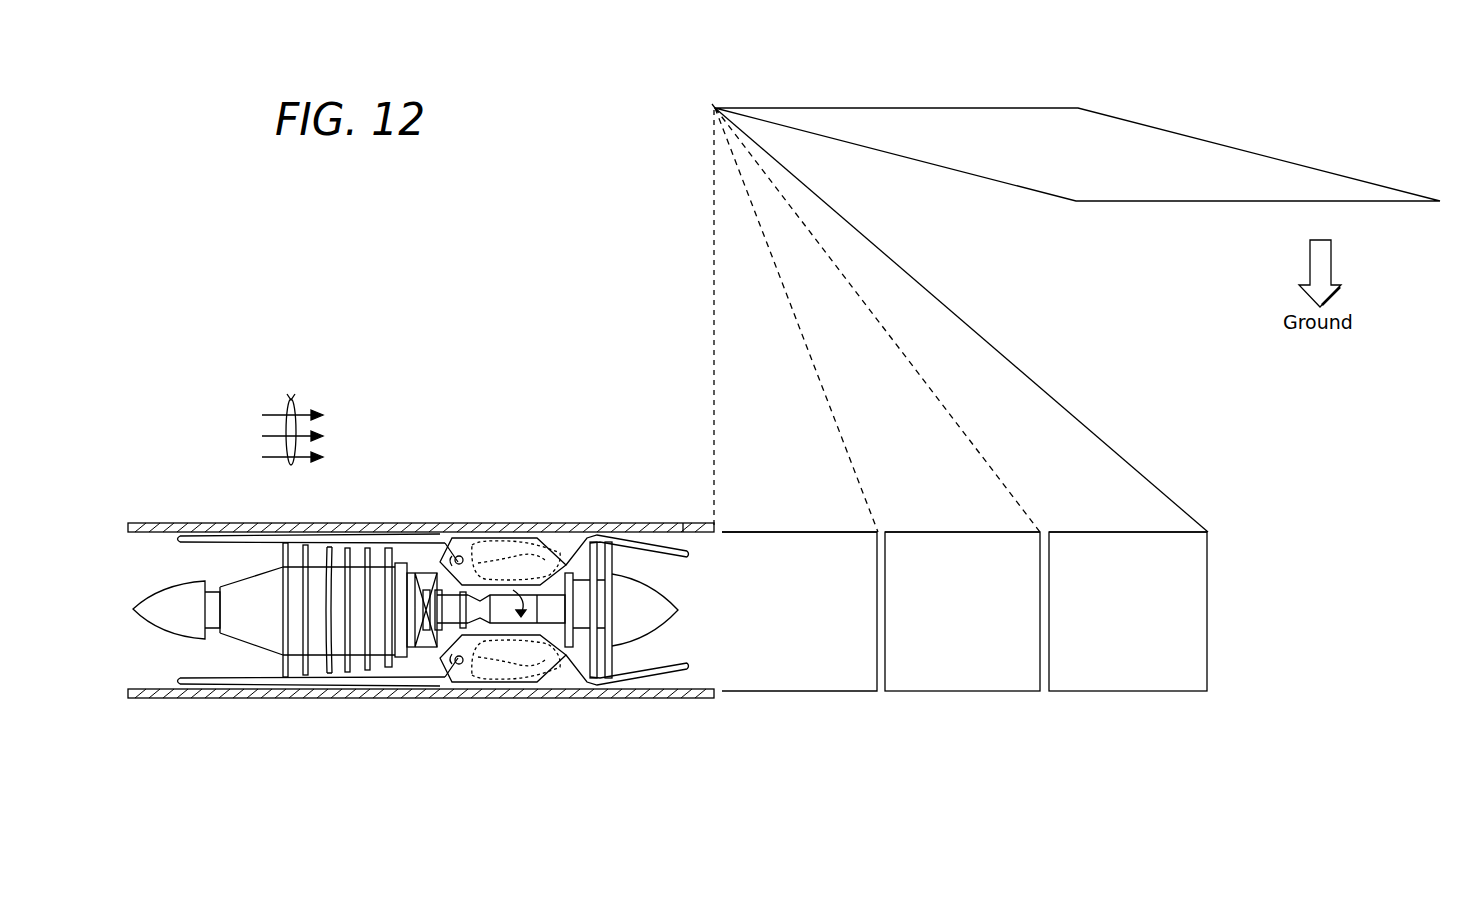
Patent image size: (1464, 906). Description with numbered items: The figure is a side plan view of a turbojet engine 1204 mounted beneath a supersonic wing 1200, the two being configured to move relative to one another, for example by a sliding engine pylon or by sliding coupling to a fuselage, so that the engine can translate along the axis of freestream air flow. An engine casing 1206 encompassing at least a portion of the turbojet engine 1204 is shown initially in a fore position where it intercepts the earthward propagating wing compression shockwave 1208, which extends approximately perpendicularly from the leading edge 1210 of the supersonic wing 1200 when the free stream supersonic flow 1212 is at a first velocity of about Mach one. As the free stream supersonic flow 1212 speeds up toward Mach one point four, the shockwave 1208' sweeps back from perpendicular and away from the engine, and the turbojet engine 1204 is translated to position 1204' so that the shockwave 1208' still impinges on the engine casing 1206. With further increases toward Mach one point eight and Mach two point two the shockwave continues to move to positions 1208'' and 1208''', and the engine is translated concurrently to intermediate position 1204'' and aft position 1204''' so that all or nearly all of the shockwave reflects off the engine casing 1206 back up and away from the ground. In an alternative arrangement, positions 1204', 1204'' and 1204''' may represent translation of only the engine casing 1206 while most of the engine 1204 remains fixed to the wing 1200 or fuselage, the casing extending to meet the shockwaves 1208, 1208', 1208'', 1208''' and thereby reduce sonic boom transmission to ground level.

The supersonic wing 1200 is at (1190, 156).
The turbojet engine 1204 is at (421, 642).
The engine position 1204' is at (799, 646).
The intermediate position 1204'' is at (962, 646).
The aft position 1204''' is at (1128, 646).
The engine casing 1206 is at (767, 532).
The earthward propagating wing compression shockwave 1208 is at (667, 320).
The earthward propagating wing compression shockwave 1208' is at (796, 320).
The earthward propagating wing compression shockwave 1208'' is at (877, 320).
The earthward propagating wing compression shockwave 1208''' is at (961, 320).
The leading edge 1210 is at (715, 108).
The free stream supersonic flow 1212 is at (290, 400).